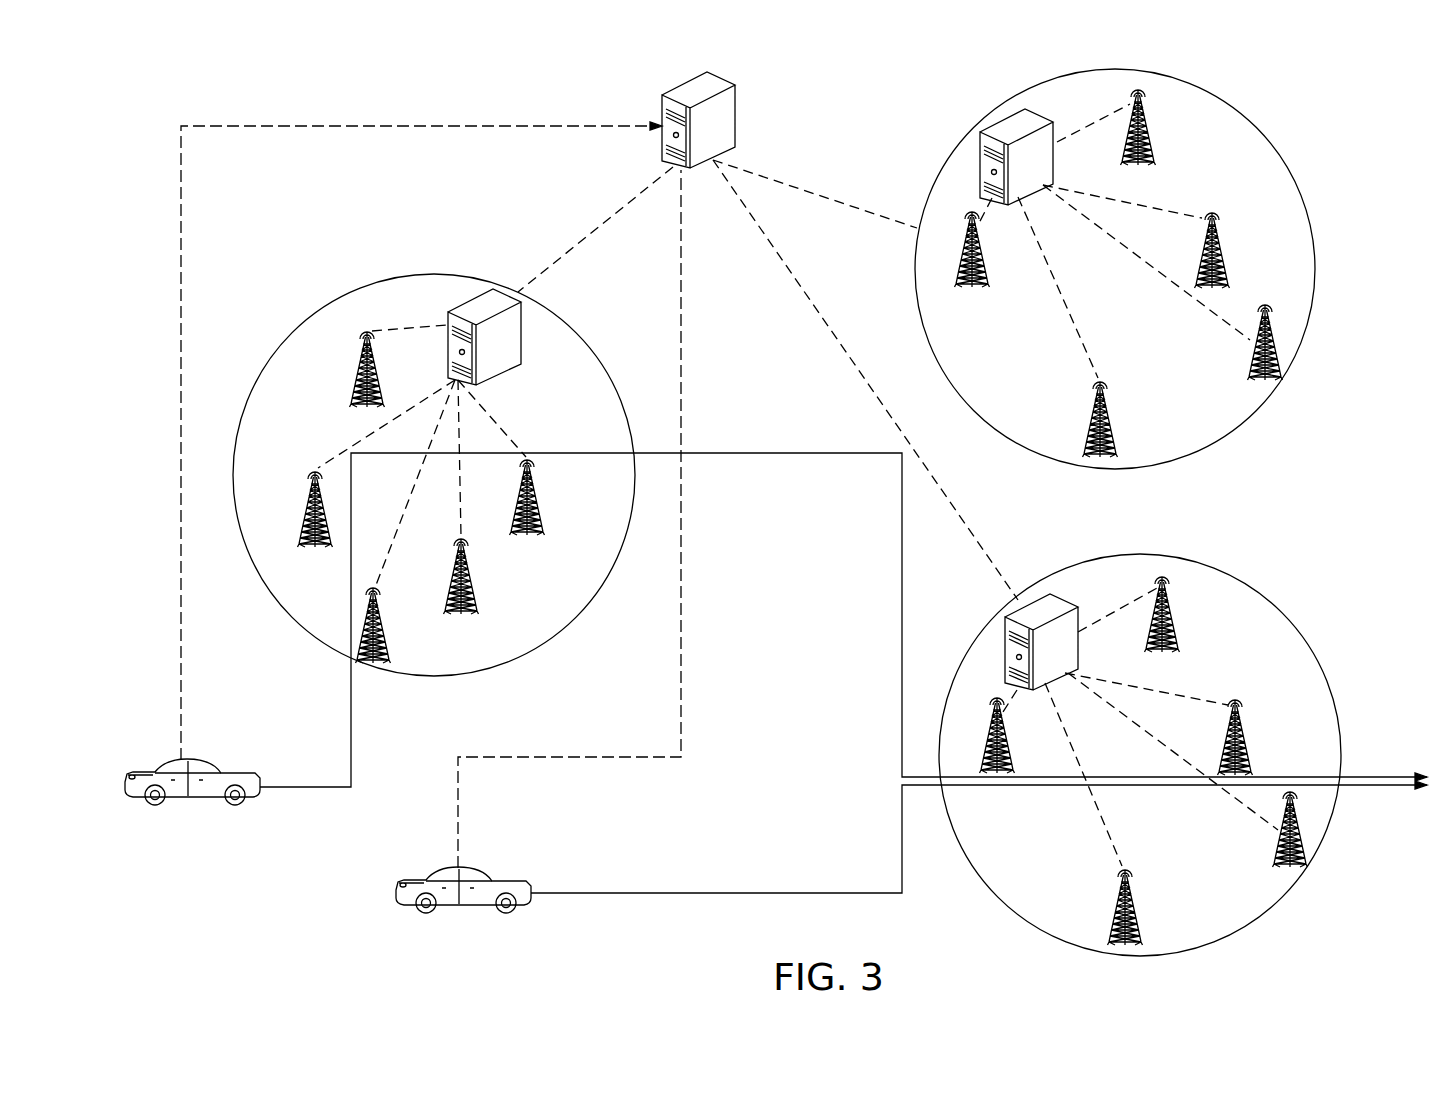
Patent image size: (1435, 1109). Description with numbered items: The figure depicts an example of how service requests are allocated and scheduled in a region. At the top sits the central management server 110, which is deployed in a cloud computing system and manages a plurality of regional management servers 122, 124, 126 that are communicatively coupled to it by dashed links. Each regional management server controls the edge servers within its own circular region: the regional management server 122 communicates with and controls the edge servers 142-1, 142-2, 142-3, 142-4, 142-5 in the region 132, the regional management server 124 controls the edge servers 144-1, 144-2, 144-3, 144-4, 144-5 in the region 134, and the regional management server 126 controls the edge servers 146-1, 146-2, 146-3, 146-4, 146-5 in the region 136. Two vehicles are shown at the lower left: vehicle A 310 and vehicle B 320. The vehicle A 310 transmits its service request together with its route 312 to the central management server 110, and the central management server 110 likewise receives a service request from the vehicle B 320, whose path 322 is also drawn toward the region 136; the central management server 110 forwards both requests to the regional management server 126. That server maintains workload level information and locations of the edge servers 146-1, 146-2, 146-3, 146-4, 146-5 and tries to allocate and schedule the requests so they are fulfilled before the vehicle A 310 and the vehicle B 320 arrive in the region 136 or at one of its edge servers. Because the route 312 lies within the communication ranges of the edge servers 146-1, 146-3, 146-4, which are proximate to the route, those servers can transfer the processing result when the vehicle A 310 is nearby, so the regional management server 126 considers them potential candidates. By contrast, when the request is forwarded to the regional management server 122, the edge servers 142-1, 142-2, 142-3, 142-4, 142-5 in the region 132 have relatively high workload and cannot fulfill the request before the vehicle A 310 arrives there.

The central management server 110 is at (738, 113).
The regional management server 122 is at (523, 305).
The regional management server 124 is at (979, 148).
The regional management server 126 is at (1041, 590).
The region 132 is at (341, 300).
The region 134 is at (1303, 196).
The region 136 is at (1328, 685).
The edge server 142-1 is at (384, 630).
The edge server 142-2 is at (316, 552).
The edge server 142-3 is at (474, 585).
The edge server 142-4 is at (352, 388).
The edge server 142-5 is at (542, 508).
The edge server 144-1 is at (982, 280).
The edge server 144-2 is at (1150, 125).
The edge server 144-3 is at (1108, 406).
The edge server 144-4 is at (1215, 252).
The edge server 144-5 is at (1252, 363).
The edge server 146-1 is at (1013, 762).
The edge server 146-2 is at (1135, 894).
The edge server 146-3 is at (1275, 849).
The edge server 146-4 is at (1242, 735).
The edge server 146-5 is at (1173, 612).
The vehicle A 310 is at (150, 766).
The vehicle B 320 is at (420, 874).
The route 312 is at (757, 452).
The route of vehicle B 322 is at (714, 892).